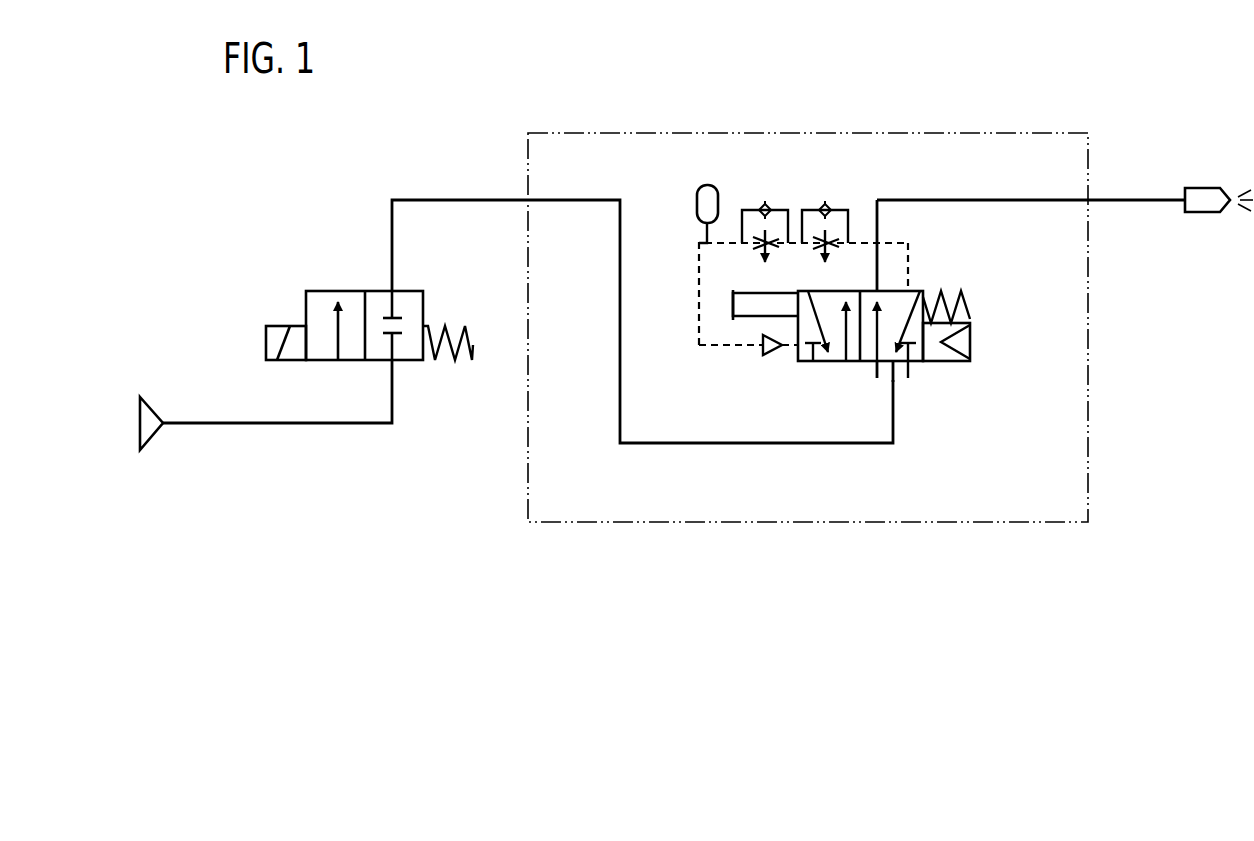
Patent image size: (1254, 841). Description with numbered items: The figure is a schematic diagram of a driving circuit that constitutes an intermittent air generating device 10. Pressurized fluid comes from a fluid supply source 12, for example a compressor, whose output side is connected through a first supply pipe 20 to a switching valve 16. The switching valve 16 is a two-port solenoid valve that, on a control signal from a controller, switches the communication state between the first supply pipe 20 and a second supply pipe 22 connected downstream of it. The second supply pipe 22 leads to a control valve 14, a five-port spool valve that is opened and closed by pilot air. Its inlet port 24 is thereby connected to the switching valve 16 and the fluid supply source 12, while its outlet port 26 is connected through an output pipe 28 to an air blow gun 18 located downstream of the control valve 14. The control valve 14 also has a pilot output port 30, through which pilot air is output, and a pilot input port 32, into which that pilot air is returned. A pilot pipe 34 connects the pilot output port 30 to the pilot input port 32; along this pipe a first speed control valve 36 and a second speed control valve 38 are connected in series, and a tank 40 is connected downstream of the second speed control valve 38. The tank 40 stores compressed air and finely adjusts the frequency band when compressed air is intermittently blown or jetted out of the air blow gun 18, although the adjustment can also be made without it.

The intermittent air generating device 10 is at (294, 137).
The fluid supply source 12 is at (140, 423).
The control valve 14 is at (826, 372).
The switching valve 16 is at (345, 278).
The air blow gun 18 is at (1200, 188).
The first supply pipe 20 is at (260, 427).
The second supply pipe 22 is at (580, 200).
The inlet port 24 is at (895, 364).
The outlet port 26 is at (876, 289).
The output pipe 28 is at (997, 200).
The pilot output port 30 is at (908, 291).
The pilot input port 32 is at (797, 348).
The pilot pipe 34 is at (699, 297).
The first speed control valve 36 is at (814, 195).
The second speed control valve 38 is at (754, 195).
The tank 40 is at (697, 208).